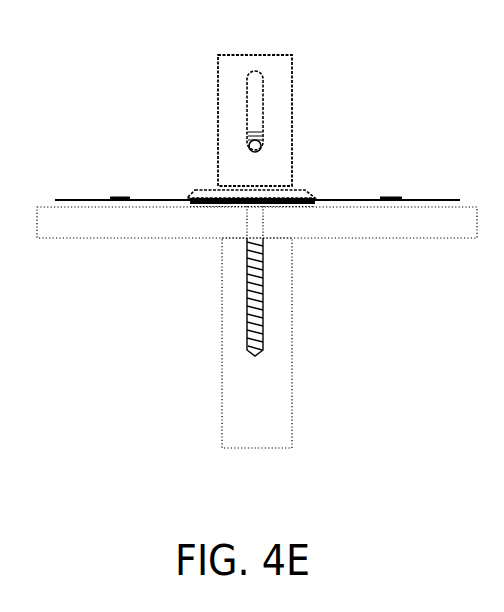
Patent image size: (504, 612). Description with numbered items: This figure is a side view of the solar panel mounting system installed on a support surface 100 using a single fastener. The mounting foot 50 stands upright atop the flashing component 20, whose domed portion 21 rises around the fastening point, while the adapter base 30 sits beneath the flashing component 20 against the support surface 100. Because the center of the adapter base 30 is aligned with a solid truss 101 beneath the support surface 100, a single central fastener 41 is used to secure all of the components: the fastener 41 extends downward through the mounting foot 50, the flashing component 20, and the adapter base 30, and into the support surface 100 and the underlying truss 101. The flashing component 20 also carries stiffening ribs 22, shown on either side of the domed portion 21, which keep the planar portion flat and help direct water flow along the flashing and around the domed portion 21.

The flashing component 20 is at (257, 165).
The domed portion 21 is at (309, 187).
The stiffening ribs 22 is at (113, 197).
The adapter base 30 is at (315, 243).
The fastener 41 is at (203, 281).
The mounting foot 50 is at (309, 120).
The support surface 100 is at (257, 270).
The solid truss 101 is at (303, 343).